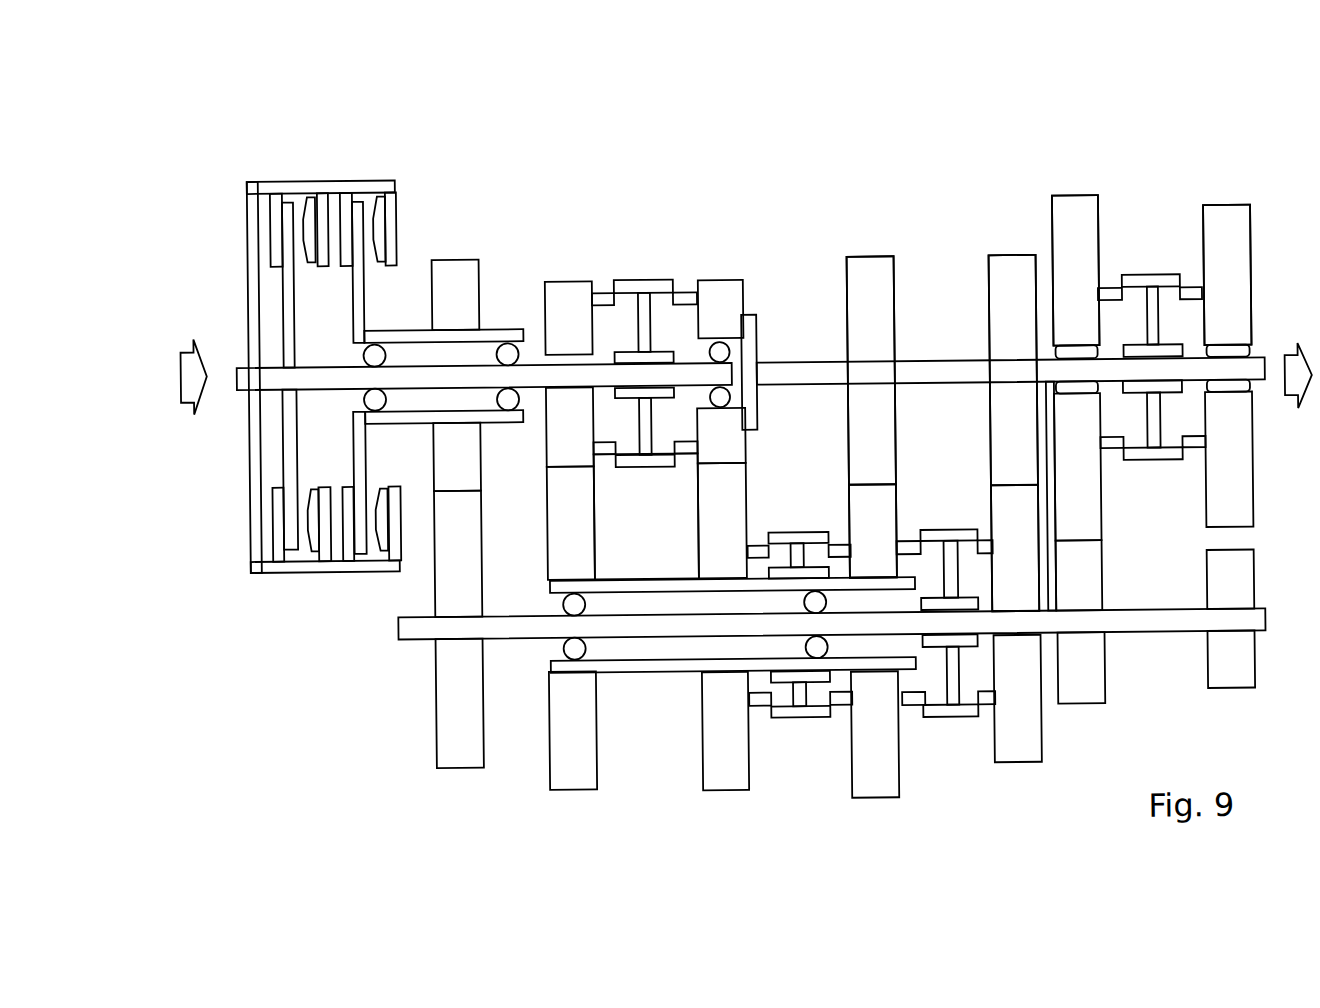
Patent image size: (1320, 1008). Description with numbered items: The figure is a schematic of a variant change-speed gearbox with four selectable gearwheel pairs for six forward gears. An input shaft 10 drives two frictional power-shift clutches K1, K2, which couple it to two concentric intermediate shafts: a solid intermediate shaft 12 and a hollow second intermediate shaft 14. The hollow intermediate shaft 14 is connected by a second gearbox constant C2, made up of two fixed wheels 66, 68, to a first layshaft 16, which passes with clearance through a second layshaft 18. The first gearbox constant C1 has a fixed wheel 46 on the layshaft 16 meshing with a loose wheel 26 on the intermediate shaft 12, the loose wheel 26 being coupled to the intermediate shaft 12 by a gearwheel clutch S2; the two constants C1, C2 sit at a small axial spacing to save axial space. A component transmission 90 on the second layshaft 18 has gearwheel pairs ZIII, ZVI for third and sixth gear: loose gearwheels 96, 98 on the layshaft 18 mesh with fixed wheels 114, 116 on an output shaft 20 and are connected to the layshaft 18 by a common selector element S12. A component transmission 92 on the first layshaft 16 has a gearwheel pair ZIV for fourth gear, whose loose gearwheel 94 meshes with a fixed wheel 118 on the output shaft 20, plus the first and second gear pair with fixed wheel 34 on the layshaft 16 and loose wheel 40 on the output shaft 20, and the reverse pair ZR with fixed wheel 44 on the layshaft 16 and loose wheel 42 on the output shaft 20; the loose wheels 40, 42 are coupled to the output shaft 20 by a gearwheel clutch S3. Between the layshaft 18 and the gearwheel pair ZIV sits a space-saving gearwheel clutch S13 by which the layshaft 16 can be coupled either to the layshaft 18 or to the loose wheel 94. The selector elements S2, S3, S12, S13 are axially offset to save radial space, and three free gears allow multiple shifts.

The input shaft 10 is at (241, 385).
The intermediate shaft 12 is at (298, 374).
The second intermediate shaft 14 is at (387, 326).
The first layshaft 16 is at (517, 625).
The second layshaft 18 is at (565, 674).
The output shaft 20 is at (1256, 360).
The loose wheel 26 is at (570, 441).
The fixed wheel 34 is at (1091, 579).
The loose wheel 40 is at (1079, 294).
The loose wheel 42 is at (1228, 243).
The fixed wheel 44 is at (1231, 590).
The fixed wheel 46 is at (573, 742).
The fixed wheel 66 is at (468, 465).
The fixed wheel 68 is at (459, 742).
The component transmission 90 is at (676, 859).
The component transmission 92 is at (1036, 859).
The gearwheel 94 is at (1010, 530).
The gearwheel 96 is at (722, 500).
The gearwheel 98 is at (872, 522).
The fixed wheel 114 is at (720, 453).
The fixed wheel 116 is at (855, 291).
The fixed wheel 118 is at (1014, 311).
The first gearbox constant C1 is at (569, 253).
The second gearbox constant C2 is at (454, 236).
The power-shift clutch K1 is at (295, 546).
The power-shift clutch K2 is at (362, 551).
The gearwheel clutch S2 is at (652, 279).
The gearwheel clutch S3 is at (1159, 279).
The selector element S12 is at (793, 719).
The gearwheel clutch S13 is at (930, 720).
The gearwheel pair ZVI is at (735, 255).
The gearwheel pair ZIII is at (871, 229).
The gearwheel pair ZIV is at (982, 178).
The gearwheel pair ZR is at (1233, 179).